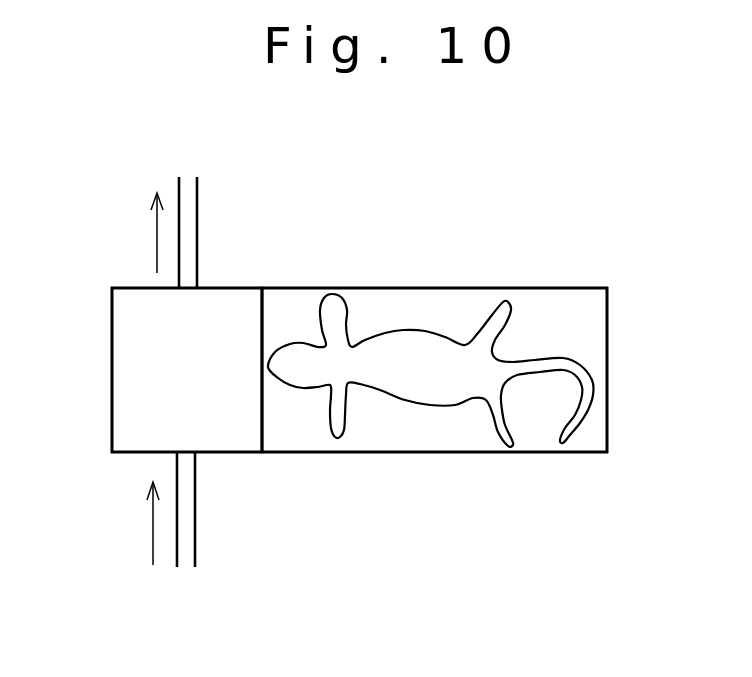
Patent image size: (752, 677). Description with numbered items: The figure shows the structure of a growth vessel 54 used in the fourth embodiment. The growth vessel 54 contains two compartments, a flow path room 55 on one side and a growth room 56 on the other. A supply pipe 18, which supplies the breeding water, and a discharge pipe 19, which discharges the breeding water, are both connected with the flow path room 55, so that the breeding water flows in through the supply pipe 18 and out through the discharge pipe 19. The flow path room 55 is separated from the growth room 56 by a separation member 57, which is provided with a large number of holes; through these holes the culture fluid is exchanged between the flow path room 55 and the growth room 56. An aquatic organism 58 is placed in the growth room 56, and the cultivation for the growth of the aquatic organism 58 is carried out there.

The supply pipe 18 is at (197, 520).
The discharge pipe 19 is at (198, 203).
The growth vessel 54 is at (447, 261).
The flow path room 55 is at (137, 393).
The growth room 56 is at (423, 425).
The separation member 57 is at (257, 302).
The aquatic organism 58 is at (445, 383).